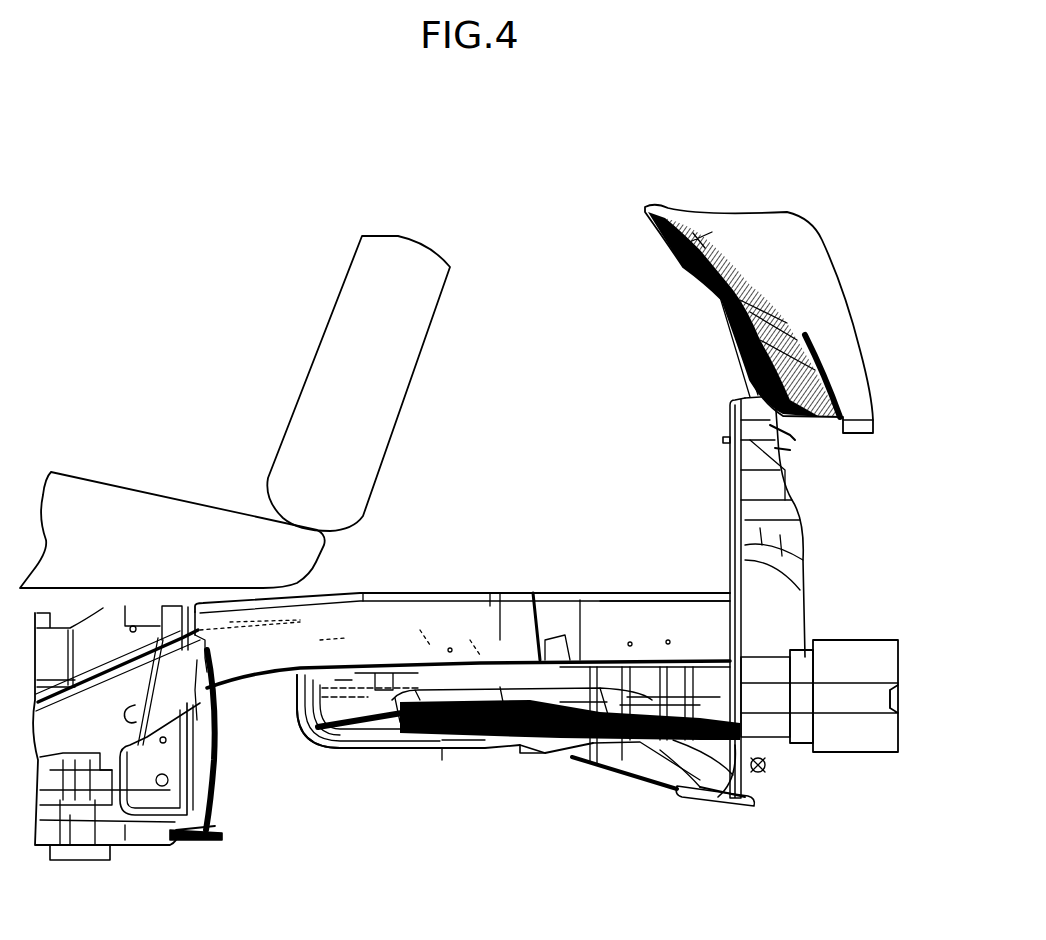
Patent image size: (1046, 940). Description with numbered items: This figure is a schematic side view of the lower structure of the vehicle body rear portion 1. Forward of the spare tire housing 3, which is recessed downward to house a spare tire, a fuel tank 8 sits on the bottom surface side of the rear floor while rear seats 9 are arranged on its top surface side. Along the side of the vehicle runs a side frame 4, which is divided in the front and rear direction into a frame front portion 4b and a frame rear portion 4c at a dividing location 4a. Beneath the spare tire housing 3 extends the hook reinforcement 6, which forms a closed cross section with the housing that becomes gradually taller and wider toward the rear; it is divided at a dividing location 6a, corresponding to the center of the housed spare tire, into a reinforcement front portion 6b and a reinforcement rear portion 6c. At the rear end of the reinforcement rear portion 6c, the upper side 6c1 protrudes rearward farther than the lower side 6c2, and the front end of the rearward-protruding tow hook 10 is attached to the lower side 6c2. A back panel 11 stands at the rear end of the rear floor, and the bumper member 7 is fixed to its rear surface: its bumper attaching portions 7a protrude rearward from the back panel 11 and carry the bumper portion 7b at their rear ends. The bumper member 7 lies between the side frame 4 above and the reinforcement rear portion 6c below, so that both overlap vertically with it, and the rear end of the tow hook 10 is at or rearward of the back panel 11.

The vehicle body rear portion 1 is at (608, 167).
The spare tire housing 3 is at (442, 700).
The side frame 4 is at (437, 612).
The dividing location 4a is at (535, 592).
The frame front portion 4b is at (372, 650).
The frame rear portion 4c is at (648, 627).
The hook reinforcement 6 is at (548, 752).
The dividing location 6a is at (527, 750).
The reinforcement front portion 6b is at (378, 750).
The reinforcement rear portion 6c is at (635, 760).
The upper side 6c1 is at (770, 758).
The lower side 6c2 is at (730, 800).
The bumper member 7 is at (848, 622).
The bumper attaching portion 7a is at (772, 700).
The bumper portion 7b is at (876, 700).
The fuel tank 8 is at (213, 800).
The rear seat 9 is at (412, 252).
The tow hook 10 is at (695, 797).
The back panel 11 is at (757, 770).